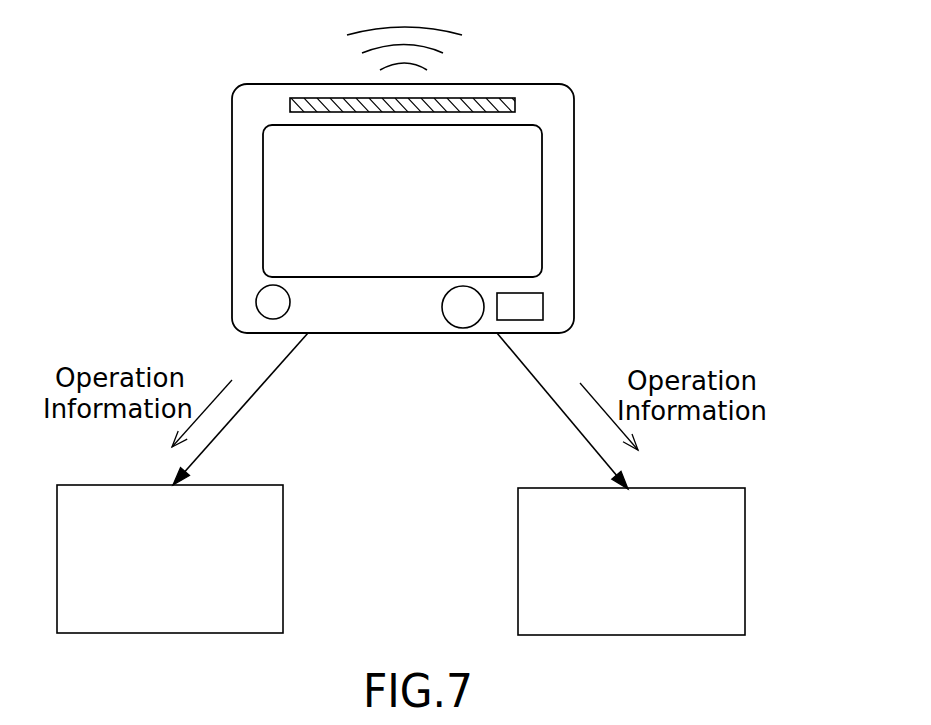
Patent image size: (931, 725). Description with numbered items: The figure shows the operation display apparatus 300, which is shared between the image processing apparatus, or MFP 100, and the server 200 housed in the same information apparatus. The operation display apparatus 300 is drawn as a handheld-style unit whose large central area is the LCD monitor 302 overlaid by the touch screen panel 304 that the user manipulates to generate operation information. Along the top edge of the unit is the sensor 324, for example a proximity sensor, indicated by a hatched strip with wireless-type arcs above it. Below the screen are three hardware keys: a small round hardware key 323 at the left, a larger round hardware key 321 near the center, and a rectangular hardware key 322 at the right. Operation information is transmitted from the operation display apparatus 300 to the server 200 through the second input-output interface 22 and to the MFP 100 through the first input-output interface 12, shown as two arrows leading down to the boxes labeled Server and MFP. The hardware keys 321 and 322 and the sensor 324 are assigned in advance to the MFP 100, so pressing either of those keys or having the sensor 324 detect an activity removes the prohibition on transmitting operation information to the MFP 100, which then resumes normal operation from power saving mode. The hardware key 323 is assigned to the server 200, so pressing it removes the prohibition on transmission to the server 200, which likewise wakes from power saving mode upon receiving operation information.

The operation display apparatus 300 is at (632, 122).
The LCD monitor 302 is at (543, 202).
The touch screen panel 304 is at (303, 155).
The sensor 324 is at (482, 99).
The hardware key 323 is at (273, 300).
The hardware key 321 is at (459, 314).
The hardware key 322 is at (545, 308).
The second input-output interface 22 is at (265, 380).
The first input-output interface 12 is at (560, 415).
The server 200 is at (245, 485).
The image processing apparatus 100 is at (715, 489).